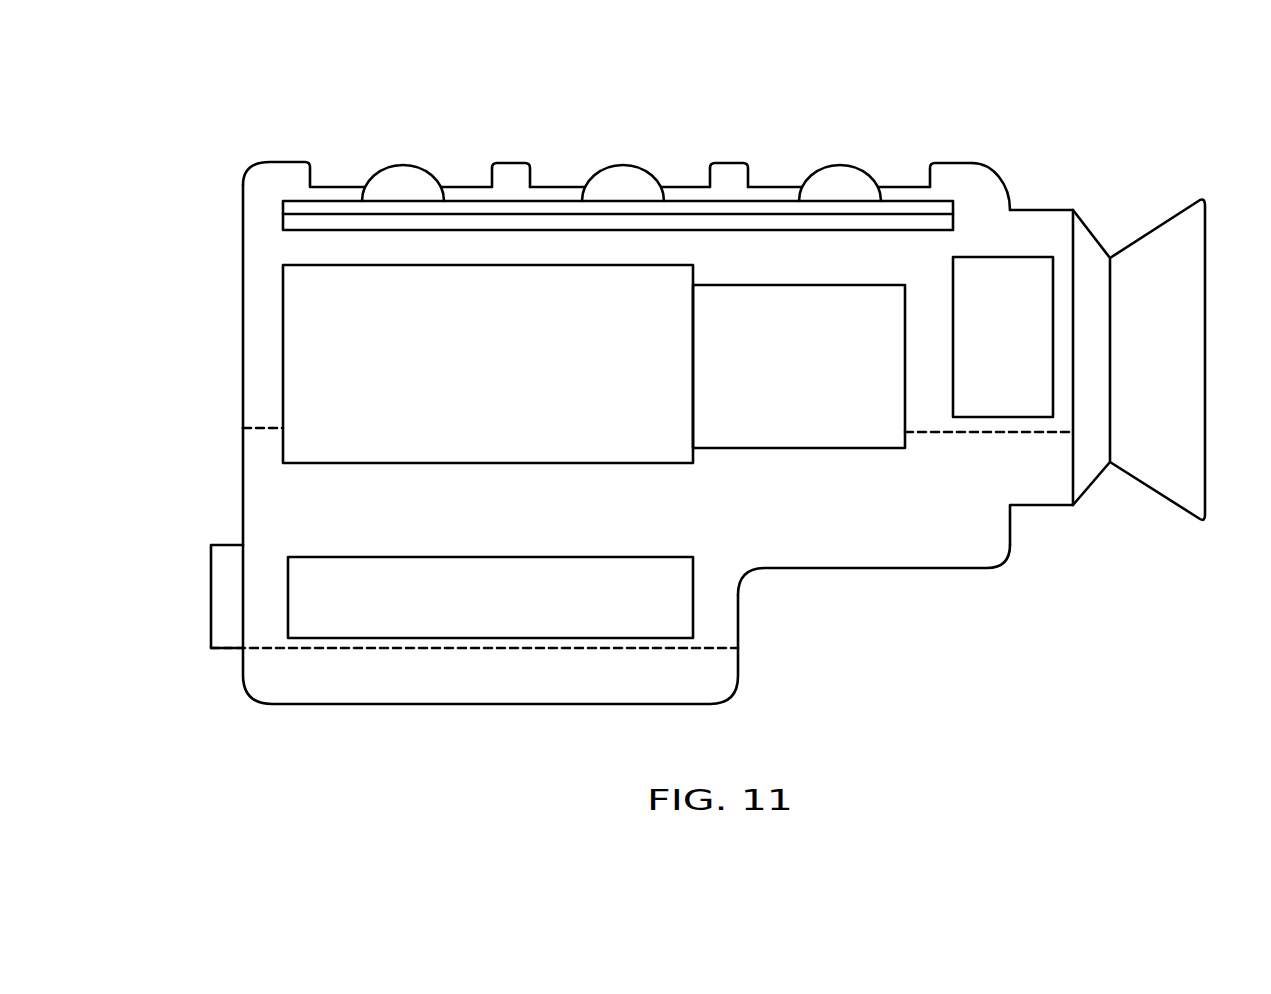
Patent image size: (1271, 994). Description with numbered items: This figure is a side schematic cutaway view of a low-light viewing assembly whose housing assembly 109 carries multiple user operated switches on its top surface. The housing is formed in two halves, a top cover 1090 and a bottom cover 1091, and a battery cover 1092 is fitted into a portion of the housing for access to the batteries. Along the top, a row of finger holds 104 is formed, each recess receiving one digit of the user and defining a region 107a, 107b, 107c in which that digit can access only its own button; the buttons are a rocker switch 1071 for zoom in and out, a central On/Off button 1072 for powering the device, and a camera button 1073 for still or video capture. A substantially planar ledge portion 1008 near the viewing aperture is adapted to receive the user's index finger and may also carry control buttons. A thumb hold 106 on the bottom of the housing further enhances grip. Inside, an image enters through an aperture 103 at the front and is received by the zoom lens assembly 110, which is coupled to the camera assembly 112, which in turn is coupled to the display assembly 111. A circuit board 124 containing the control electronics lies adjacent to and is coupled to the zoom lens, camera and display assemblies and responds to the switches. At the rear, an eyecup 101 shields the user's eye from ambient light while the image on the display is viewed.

The eyecup 101 is at (1190, 323).
The aperture 103 is at (212, 602).
The finger holds 104 is at (334, 150).
The thumb hold 106 is at (900, 570).
The rocker switch 1071 is at (840, 167).
The central On/Off button 1072 is at (622, 165).
The camera button 1073 is at (405, 165).
The region 107a is at (895, 180).
The region 107b is at (673, 180).
The region 107c is at (462, 180).
The housing assembly 109 is at (1018, 135).
The planar ledge portion 1008 is at (1037, 210).
The zoom lens assembly 110 is at (363, 367).
The display assembly 111 is at (1025, 380).
The camera assembly 112 is at (788, 403).
The circuit board 124 is at (307, 230).
The top cover 1090 is at (270, 302).
The bottom cover 1091 is at (272, 463).
The battery cover 1092 is at (302, 683).